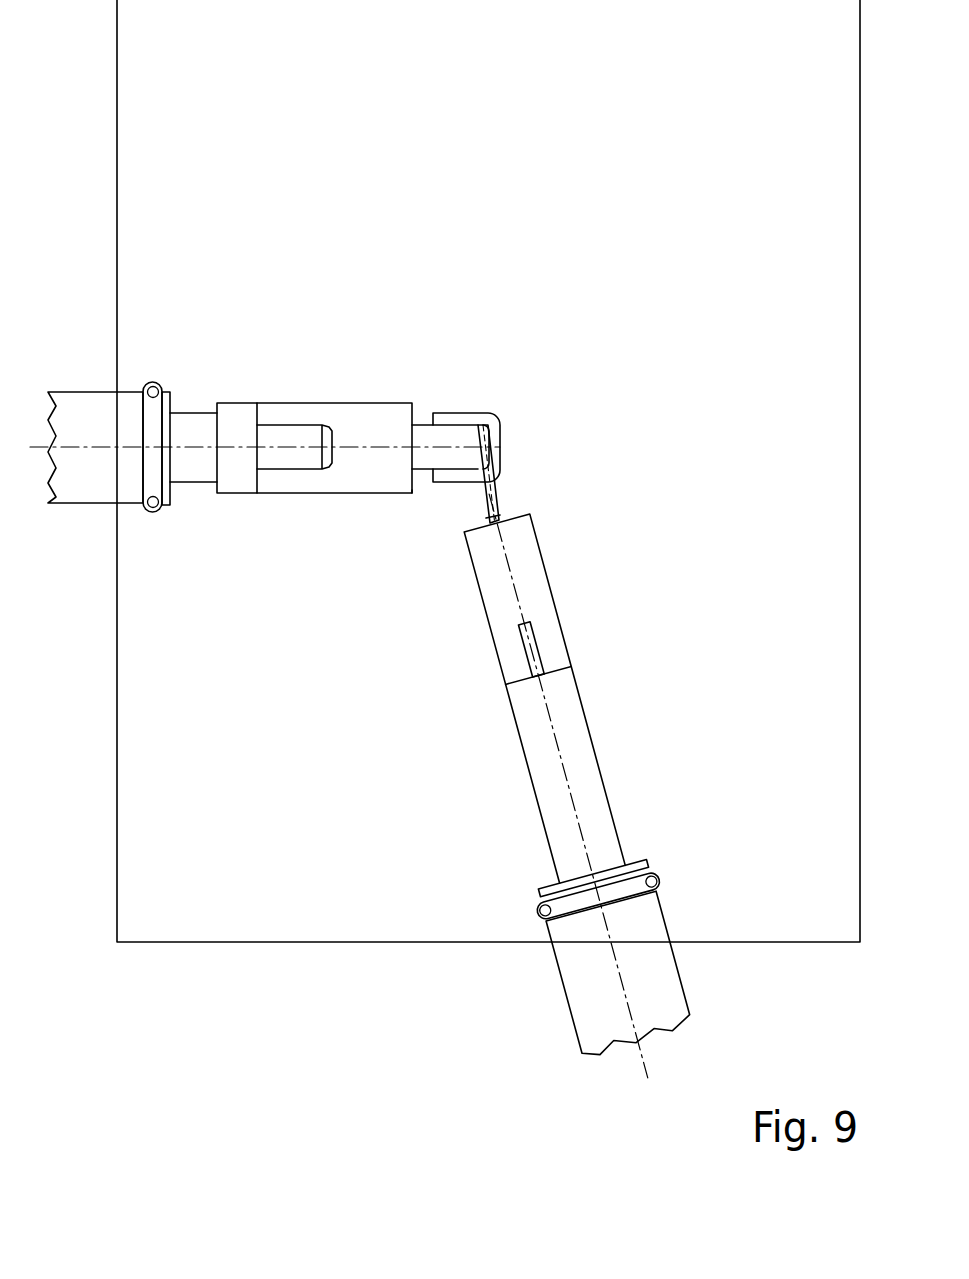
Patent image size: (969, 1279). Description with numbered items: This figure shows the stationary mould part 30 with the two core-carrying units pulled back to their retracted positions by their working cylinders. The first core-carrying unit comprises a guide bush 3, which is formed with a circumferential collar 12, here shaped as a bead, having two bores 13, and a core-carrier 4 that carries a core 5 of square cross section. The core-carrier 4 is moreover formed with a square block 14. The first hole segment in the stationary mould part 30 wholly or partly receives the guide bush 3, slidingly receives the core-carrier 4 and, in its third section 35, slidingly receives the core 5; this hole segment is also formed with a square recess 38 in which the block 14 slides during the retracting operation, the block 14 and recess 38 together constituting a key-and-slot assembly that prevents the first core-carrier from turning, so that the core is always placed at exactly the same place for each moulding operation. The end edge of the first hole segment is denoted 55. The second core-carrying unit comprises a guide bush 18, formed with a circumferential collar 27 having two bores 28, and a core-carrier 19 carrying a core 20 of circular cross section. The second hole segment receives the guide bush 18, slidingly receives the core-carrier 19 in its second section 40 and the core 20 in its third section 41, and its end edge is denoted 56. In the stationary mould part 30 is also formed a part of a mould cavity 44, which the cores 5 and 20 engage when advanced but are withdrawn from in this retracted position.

The guide bush 3 is at (90, 495).
The core-carrier 4 is at (198, 477).
The core 5 is at (295, 430).
The circumferential collar 12 is at (148, 510).
The bores 13 is at (157, 383).
The square block 14 is at (232, 408).
The guide bush 18 is at (653, 920).
The core-carrier 19 is at (585, 763).
The core 20 is at (537, 642).
The circumferential collar 27 is at (658, 876).
The bores 28 is at (538, 910).
The stationary mould part 30 is at (110, 818).
The third section 35 is at (418, 432).
The square recess 38 is at (302, 485).
The second section 40 is at (537, 562).
The third section 41 is at (498, 487).
The mould cavity 44 is at (495, 423).
The end edge 55 is at (407, 470).
The end edge 56 is at (482, 530).